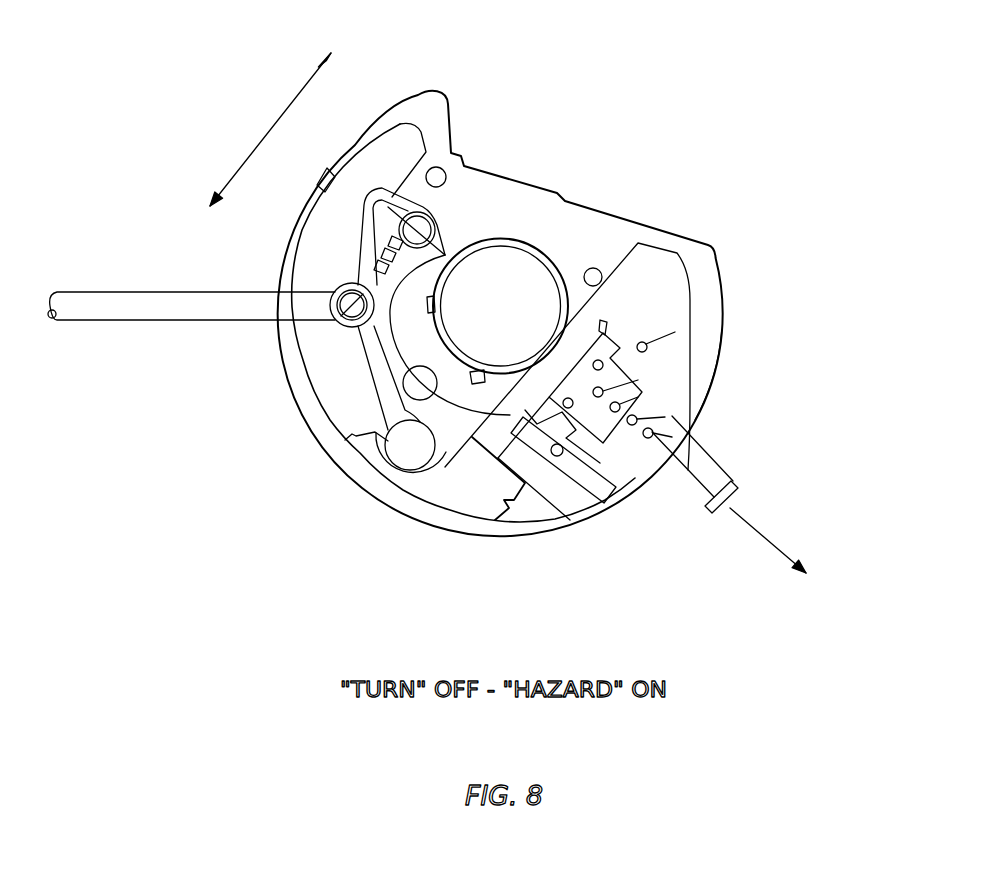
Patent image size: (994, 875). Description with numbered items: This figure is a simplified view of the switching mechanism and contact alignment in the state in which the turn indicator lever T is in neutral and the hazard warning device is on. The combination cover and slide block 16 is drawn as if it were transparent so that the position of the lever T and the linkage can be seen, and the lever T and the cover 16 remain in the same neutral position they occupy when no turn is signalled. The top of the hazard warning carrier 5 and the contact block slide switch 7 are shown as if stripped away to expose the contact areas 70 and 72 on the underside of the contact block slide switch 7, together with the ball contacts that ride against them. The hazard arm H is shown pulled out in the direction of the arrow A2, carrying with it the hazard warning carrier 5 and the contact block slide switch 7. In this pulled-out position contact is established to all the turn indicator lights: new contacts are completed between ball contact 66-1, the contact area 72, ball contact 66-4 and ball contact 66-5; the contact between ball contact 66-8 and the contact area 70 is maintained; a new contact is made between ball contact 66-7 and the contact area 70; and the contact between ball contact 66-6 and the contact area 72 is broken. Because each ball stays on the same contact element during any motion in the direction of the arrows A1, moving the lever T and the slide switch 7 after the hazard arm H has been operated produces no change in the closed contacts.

The hazard warning carrier 5 is at (690, 438).
The contact block slide switch 7 is at (633, 321).
The combination cover and slide block 16 is at (667, 267).
The contact area 70 is at (597, 305).
The contact area 72 is at (613, 490).
The ball contact 66-1 is at (512, 500).
The ball contact 66-4 is at (675, 332).
The ball contact 66-5 is at (672, 437).
The ball contact 66-6 is at (665, 417).
The ball contact 66-7 is at (638, 397).
The ball contact 66-8 is at (638, 380).
The hazard arm H is at (698, 502).
The turn indicator lever T is at (125, 290).
The arrows A1 is at (270, 129).
The arrow A2 is at (777, 540).